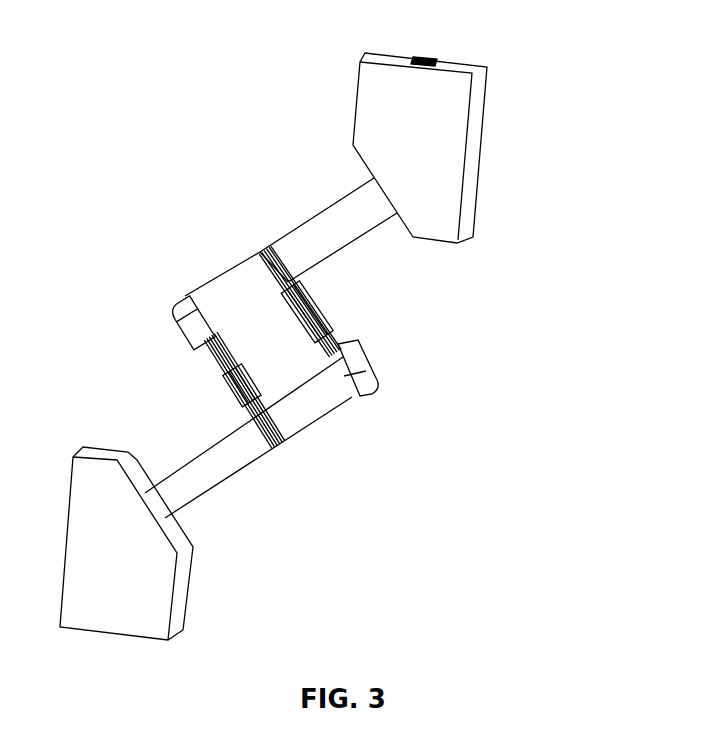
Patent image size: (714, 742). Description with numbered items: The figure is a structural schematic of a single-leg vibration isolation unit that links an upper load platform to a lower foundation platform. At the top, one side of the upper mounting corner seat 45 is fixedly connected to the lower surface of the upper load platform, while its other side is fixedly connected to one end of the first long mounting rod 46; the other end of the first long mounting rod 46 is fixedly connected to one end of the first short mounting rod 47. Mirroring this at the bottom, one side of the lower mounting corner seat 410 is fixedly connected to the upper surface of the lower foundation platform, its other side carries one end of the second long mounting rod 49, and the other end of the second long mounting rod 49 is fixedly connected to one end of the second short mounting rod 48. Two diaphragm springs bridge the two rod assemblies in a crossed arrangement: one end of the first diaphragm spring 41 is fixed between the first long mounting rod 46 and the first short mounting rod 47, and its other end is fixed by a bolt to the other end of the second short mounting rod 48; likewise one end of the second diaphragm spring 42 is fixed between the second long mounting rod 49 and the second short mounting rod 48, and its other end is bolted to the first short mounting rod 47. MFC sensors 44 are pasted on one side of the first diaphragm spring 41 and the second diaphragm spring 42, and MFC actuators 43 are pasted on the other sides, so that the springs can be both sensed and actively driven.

The first diaphragm spring 41 is at (340, 347).
The second diaphragm spring 42 is at (228, 380).
The MFC actuator 43 is at (235, 390).
The MFC sensor 44 is at (180, 300).
The upper mounting corner seat 45 is at (432, 147).
The first long mounting rod 46 is at (340, 230).
The first short mounting rod 47 is at (255, 287).
The second short mounting rod 48 is at (325, 398).
The second long mounting rod 49 is at (228, 465).
The lower mounting corner seat 410 is at (147, 565).